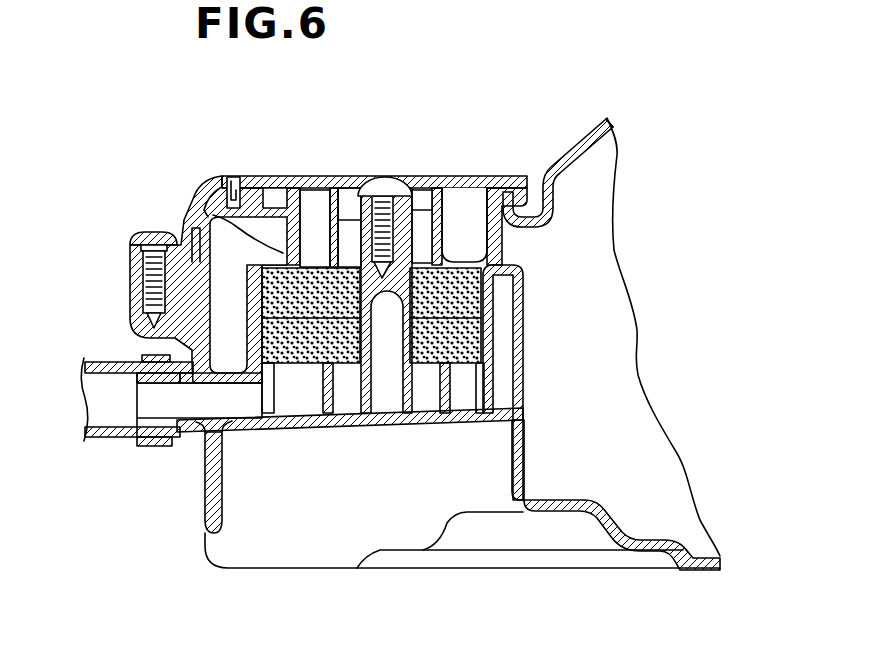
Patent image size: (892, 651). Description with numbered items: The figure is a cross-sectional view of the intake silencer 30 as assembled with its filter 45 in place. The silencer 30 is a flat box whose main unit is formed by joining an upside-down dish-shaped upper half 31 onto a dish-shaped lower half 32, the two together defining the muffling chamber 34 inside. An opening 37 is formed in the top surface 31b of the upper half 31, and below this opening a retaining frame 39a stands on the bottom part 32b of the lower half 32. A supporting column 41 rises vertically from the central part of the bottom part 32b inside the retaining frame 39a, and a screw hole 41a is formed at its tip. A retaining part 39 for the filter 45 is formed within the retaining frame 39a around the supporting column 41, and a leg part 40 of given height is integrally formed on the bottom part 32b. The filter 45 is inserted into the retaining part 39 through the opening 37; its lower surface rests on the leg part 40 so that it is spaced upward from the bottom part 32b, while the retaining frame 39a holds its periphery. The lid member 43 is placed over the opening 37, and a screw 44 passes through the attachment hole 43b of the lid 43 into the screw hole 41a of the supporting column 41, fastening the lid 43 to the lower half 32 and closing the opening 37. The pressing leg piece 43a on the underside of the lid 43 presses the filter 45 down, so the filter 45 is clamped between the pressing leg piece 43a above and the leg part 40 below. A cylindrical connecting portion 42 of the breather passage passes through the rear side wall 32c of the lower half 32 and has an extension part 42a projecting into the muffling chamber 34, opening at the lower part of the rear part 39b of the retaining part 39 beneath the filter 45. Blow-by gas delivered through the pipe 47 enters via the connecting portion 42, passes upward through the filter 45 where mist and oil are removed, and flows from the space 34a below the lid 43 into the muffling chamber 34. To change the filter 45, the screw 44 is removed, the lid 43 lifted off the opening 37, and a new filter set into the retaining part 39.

The intake silencer 30 is at (698, 176).
The upper half 31 is at (607, 114).
The top surface 31b is at (565, 157).
The lower half 32 is at (694, 574).
The bottom part 32b is at (330, 430).
The rear side wall 32c is at (200, 362).
The muffling chamber 34 is at (612, 390).
The space 34a is at (198, 203).
The opening 37 is at (504, 220).
The retaining part 39 is at (221, 230).
The retaining frame 39a is at (496, 337).
The rear part 39b is at (250, 293).
The leg part 40 is at (295, 383).
The supporting column 41 is at (352, 242).
The screw hole 41a is at (410, 208).
The connecting portion 42 is at (153, 406).
The extension part 42a is at (240, 430).
The lid member 43 is at (324, 175).
The pressing leg piece 43a is at (231, 197).
The attachment hole 43b is at (380, 177).
The screw 44 is at (381, 192).
The filter 45 is at (452, 299).
The pipe 47 is at (86, 440).